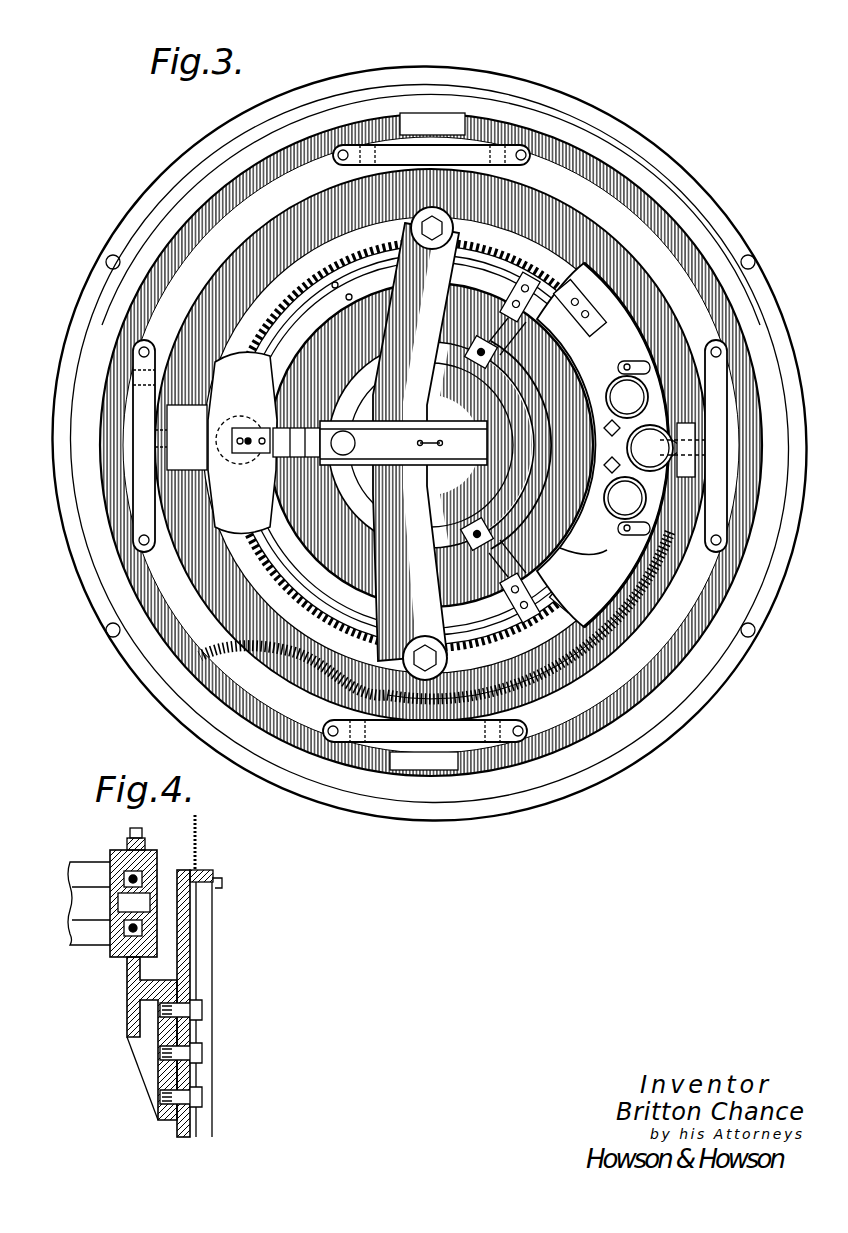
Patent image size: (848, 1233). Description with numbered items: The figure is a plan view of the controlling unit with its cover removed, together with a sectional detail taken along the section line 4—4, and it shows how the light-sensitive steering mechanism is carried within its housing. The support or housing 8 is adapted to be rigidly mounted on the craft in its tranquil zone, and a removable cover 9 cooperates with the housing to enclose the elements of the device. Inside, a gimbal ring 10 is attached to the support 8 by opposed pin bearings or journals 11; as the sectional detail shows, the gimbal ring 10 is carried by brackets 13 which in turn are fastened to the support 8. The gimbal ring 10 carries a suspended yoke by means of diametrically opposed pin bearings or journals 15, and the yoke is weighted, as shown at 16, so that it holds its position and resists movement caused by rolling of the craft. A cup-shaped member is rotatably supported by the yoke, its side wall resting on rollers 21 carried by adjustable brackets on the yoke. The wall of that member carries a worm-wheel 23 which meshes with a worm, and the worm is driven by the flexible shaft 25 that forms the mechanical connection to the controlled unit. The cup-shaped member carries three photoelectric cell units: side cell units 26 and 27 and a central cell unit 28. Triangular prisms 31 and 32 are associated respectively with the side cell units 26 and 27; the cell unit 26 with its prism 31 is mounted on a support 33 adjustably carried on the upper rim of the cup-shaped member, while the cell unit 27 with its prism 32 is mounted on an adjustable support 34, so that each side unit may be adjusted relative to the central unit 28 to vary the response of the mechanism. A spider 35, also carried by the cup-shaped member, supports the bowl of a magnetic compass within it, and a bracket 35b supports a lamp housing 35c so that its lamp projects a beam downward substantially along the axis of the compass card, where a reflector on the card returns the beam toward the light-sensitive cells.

In FIG. 3, the section line 4— 4 is at (392, 198).
In FIG. 4, the support or housing 8 is at (192, 975).
In FIG. 4, the removable cover 9 is at (200, 840).
In FIG. 3, the gimbal ring 10 is at (622, 230).
In FIG. 4, the gimbal ring 10 is at (82, 866).
In FIG. 3, the pin bearings or journals 11 is at (418, 155).
In FIG. 4, the pin bearings or journals 11 is at (124, 858).
In FIG. 3, the brackets 13 is at (447, 125).
In FIG. 4, the brackets 13 is at (127, 975).
In FIG. 3, the pin bearings or journals 15 is at (143, 437).
In FIG. 3, the weight 16 is at (431, 445).
In FIG. 3, the rollers 21 is at (252, 430).
In FIG. 3, the worm-wheel 23 is at (255, 548).
In FIG. 3, the flexible shaft 25 is at (560, 668).
In FIG. 3, the side cell unit 26 is at (672, 340).
In FIG. 3, the side cell unit 27 is at (627, 506).
In FIG. 3, the central cell unit 28 is at (650, 448).
In FIG. 3, the triangular prism 31 is at (630, 395).
In FIG. 3, the triangular prism 32 is at (667, 477).
In FIG. 3, the support 33 is at (612, 318).
In FIG. 3, the adjustable support 34 is at (607, 550).
In FIG. 3, the spider 35 is at (456, 443).
In FIG. 3, the bracket 35b is at (428, 383).
In FIG. 3, the lamp housing 35c is at (473, 433).